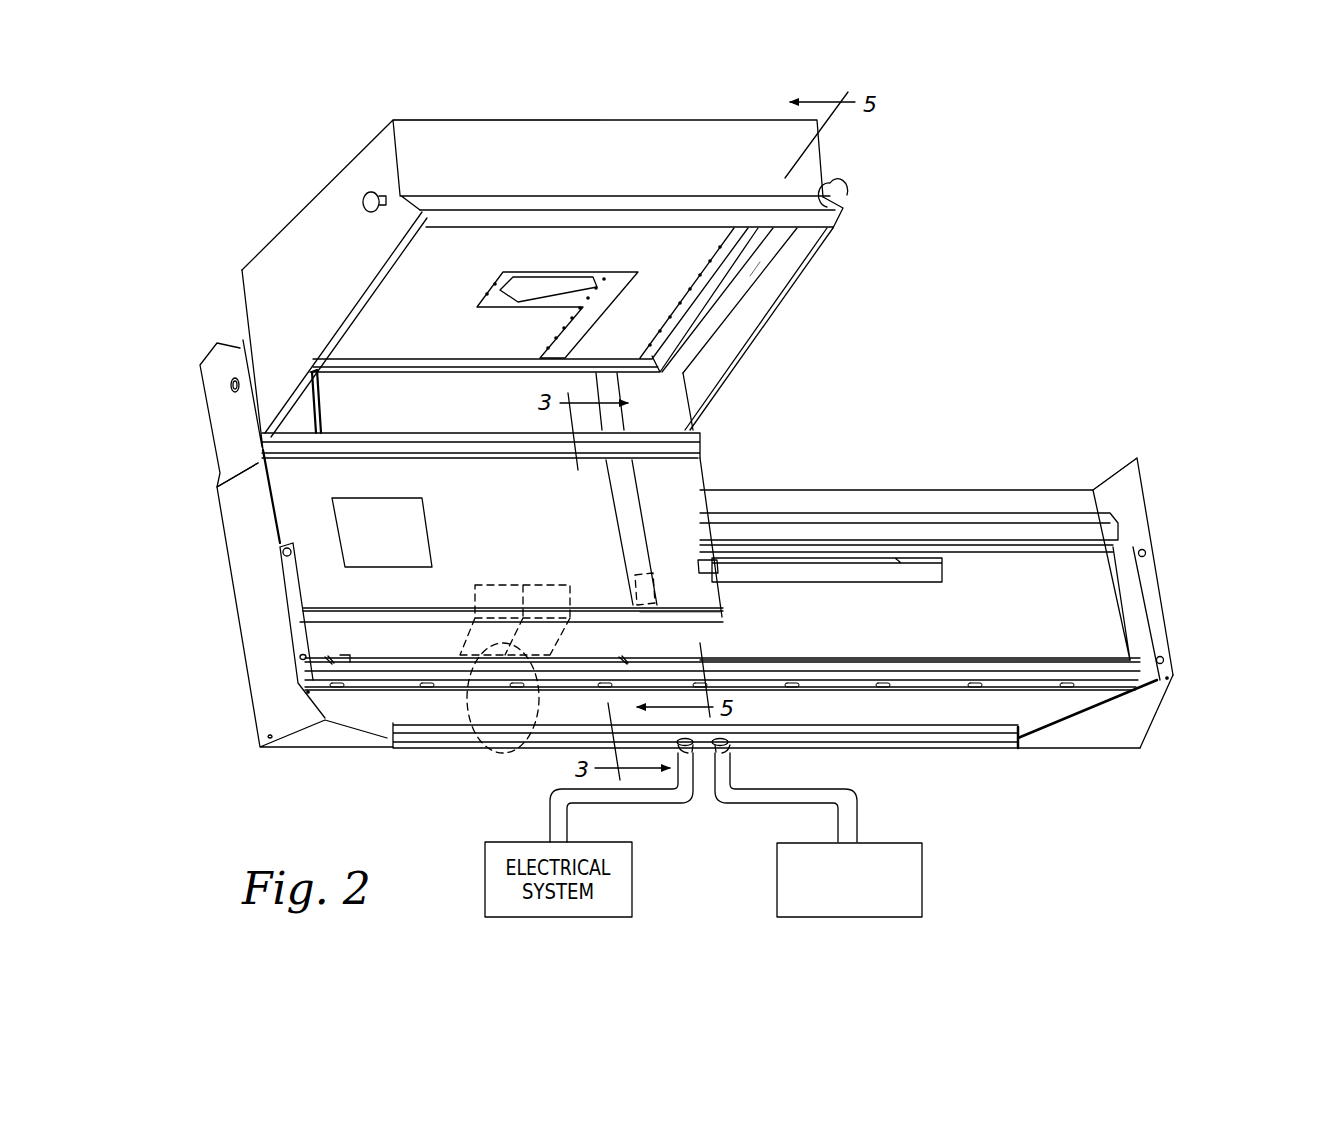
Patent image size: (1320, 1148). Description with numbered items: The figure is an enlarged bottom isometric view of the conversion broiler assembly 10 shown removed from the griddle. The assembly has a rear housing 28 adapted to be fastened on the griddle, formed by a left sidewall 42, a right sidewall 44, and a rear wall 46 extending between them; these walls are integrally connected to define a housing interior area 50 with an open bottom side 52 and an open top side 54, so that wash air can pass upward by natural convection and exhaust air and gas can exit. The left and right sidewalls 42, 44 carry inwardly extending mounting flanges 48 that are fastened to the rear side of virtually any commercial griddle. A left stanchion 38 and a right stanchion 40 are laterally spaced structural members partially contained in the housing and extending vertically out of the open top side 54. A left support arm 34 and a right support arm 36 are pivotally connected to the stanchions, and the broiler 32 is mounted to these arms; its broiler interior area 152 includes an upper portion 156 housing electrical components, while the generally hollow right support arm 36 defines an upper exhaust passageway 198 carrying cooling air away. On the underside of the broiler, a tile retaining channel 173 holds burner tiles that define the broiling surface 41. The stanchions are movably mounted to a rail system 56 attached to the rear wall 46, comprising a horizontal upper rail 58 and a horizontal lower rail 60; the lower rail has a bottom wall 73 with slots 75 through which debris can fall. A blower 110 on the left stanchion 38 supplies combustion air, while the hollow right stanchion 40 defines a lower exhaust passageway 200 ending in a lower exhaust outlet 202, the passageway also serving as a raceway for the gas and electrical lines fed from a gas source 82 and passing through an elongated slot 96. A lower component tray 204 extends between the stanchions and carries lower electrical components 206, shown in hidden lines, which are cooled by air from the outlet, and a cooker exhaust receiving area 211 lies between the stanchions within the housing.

The conversion broiler assembly 10 is at (998, 197).
The rear housing 28 is at (228, 592).
The broiler 32 is at (603, 135).
The left support arm 34 is at (238, 330).
The right support arm 36 is at (775, 240).
The left stanchion 38 is at (290, 505).
The right stanchion 40 is at (680, 493).
The broiling surface 41 is at (670, 248).
The left sidewall 42 is at (245, 558).
The right sidewall 44 is at (1113, 493).
The rear wall 46 is at (422, 750).
The mounting flanges 48 is at (290, 653).
The housing interior area 50 is at (358, 704).
The open bottom side 52 is at (1088, 708).
The open top side 54 is at (1093, 488).
The rail system 56 is at (832, 536).
The upper rail 58 is at (1027, 530).
The lower rail 60 is at (985, 660).
The bottom wall 73 is at (942, 687).
The slots 75 is at (605, 688).
The gas source 82 is at (922, 865).
The elongated slot 96 is at (878, 584).
The blower 110 is at (398, 520).
The broiler interior area 152 is at (727, 312).
The upper portion 156 is at (447, 148).
The tile retaining channel 173 is at (478, 297).
The upper exhaust passageway 198 is at (755, 272).
The lower exhaust passageway 200 is at (687, 537).
The lower exhaust outlet 202 is at (658, 583).
The lower component tray 204 is at (657, 612).
The lower electrical components 206 is at (495, 757).
The cooker exhaust receiving area 211 is at (477, 540).